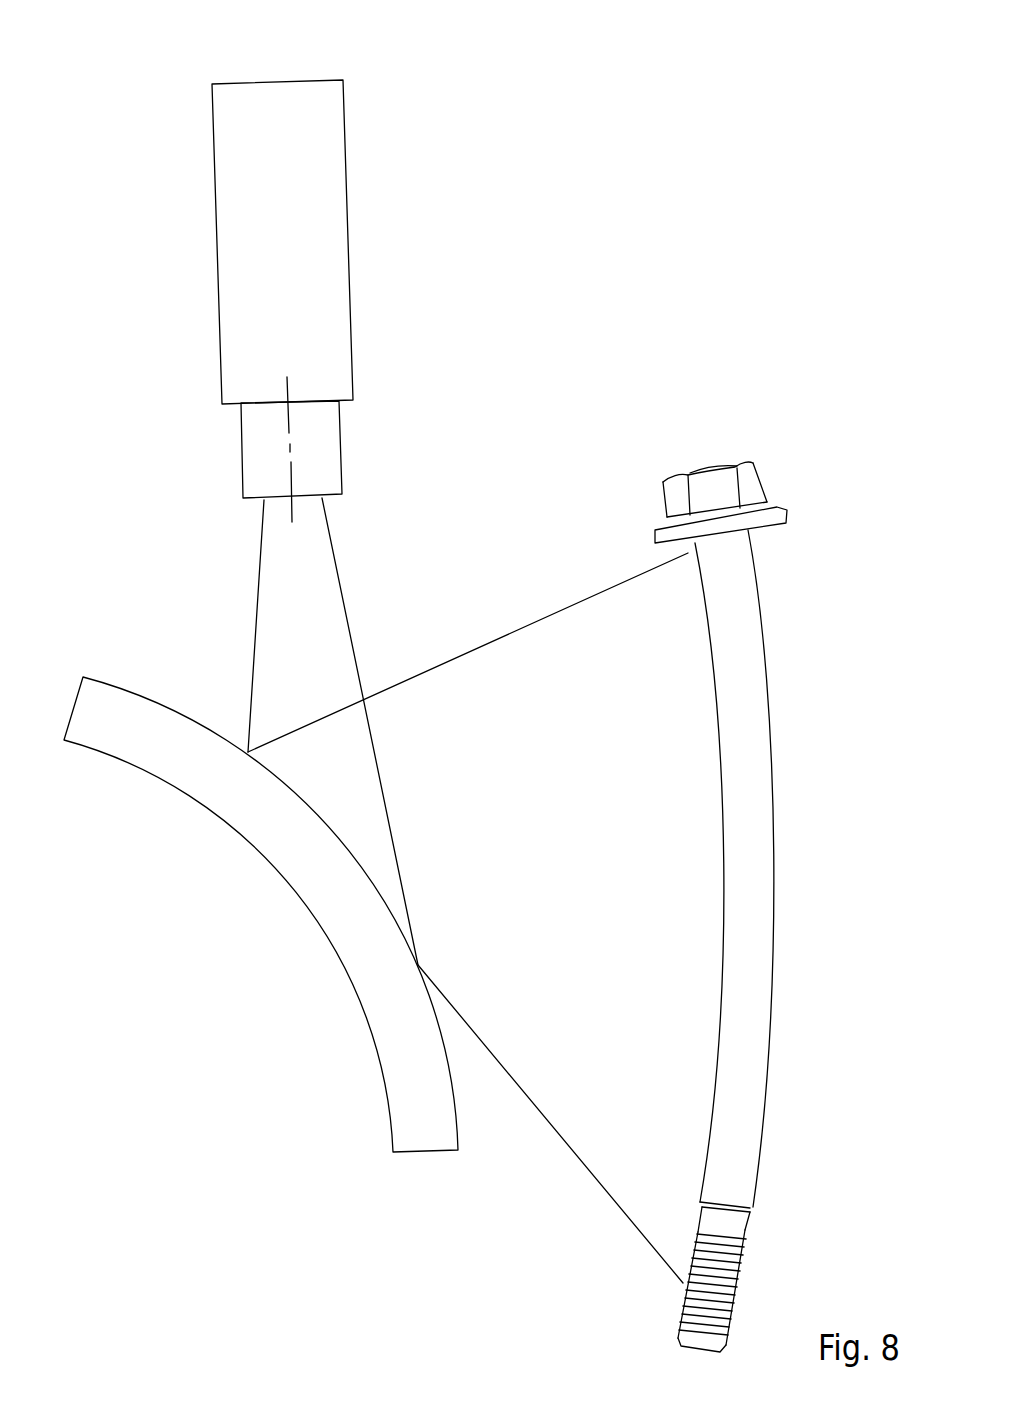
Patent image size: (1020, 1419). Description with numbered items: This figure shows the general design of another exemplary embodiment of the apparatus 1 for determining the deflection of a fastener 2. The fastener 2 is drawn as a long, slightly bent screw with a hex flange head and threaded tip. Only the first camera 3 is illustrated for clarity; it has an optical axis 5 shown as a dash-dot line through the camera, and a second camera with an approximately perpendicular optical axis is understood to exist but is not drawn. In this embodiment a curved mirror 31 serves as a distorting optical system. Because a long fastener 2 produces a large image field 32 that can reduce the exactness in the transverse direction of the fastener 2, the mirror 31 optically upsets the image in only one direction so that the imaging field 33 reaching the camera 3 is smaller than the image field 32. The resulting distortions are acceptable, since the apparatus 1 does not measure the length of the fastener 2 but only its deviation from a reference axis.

The apparatus 1 is at (442, 292).
The fastener 2 is at (767, 657).
The first camera 3 is at (255, 80).
The optical axis 5 is at (381, 382).
The curved mirror 31 is at (110, 722).
The image field 32 is at (657, 1162).
The imaging field 33 is at (292, 598).